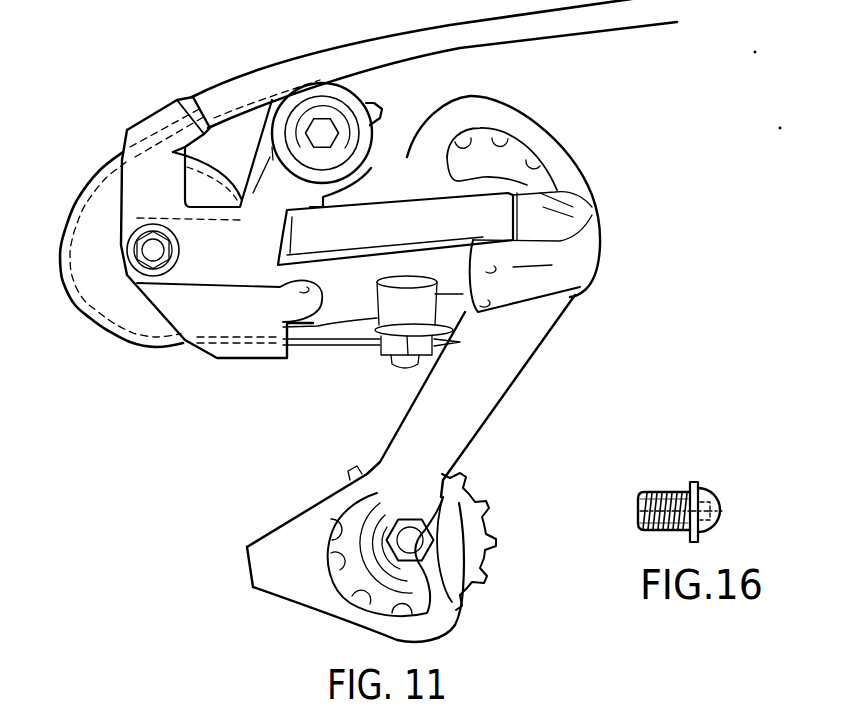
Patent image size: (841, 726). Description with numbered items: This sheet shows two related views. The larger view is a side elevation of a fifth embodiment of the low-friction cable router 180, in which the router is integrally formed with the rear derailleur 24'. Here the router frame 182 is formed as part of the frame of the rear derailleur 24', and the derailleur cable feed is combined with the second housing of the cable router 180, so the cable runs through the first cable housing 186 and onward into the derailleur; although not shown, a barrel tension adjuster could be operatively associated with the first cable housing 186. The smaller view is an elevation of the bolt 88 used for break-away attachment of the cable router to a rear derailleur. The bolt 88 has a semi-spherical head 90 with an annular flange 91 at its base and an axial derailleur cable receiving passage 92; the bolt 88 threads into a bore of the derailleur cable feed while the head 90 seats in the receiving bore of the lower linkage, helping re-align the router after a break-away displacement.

In FIG. 11, the rear derailleur 24' is at (454, 321).
In FIG. 11, the low-friction cable router 180 is at (197, 373).
In FIG. 11, the router frame 182 is at (181, 312).
In FIG. 11, the first cable housing 186 is at (152, 124).
In FIG. 16, the bolt 88 is at (667, 477).
In FIG. 16, the semi-spherical head 90 is at (707, 528).
In FIG. 16, the flange 91 is at (693, 480).
In FIG. 16, the axial derailleur cable receiving passage 92 is at (713, 490).